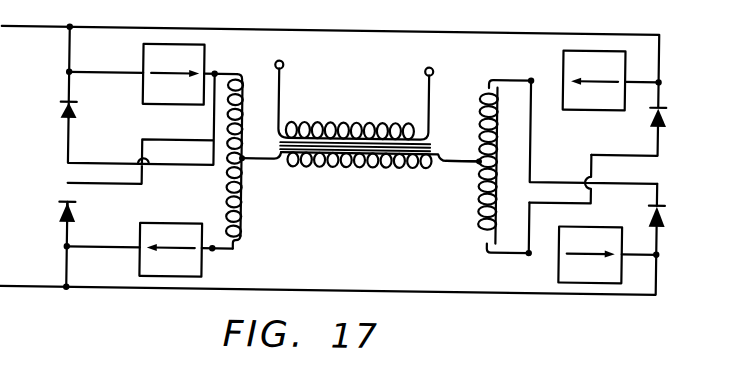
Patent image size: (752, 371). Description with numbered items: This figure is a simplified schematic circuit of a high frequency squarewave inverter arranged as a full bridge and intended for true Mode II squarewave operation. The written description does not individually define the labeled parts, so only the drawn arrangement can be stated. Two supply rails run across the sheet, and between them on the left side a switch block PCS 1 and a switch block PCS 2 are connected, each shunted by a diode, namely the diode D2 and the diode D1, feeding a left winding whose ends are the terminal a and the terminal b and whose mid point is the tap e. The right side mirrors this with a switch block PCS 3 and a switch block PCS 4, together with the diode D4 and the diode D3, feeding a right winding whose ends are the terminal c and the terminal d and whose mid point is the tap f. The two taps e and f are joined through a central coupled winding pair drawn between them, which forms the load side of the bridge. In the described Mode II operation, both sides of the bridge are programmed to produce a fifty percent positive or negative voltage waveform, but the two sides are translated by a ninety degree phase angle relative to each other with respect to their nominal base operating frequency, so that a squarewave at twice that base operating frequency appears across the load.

The phase controlled switch PCS 1 is at (153, 74).
The phase controlled switch PCS 2 is at (149, 249).
The phase controlled switch PCS 3 is at (611, 81).
The phase controlled switch PCS 4 is at (607, 254).
The diode D1 is at (83, 211).
The diode D2 is at (85, 110).
The diode D3 is at (672, 231).
The diode D4 is at (674, 107).
The winding terminal a is at (244, 66).
The winding terminal b is at (241, 249).
The winding terminal c is at (503, 71).
The winding terminal d is at (498, 257).
The winding center tap e is at (260, 169).
The winding center tap f is at (477, 165).